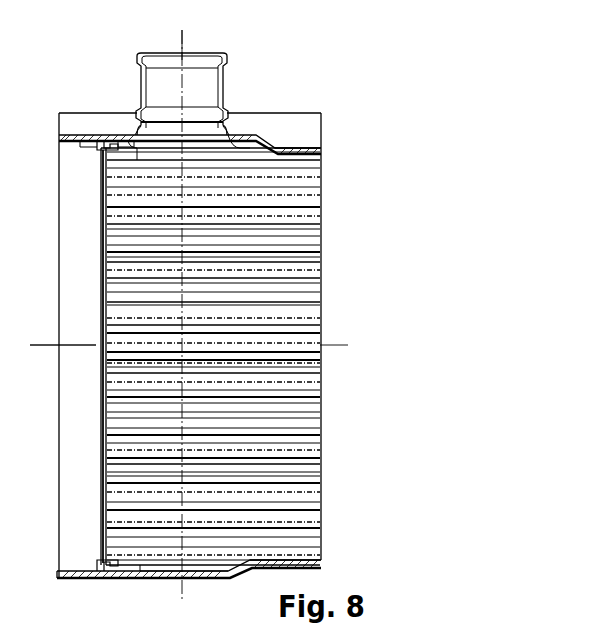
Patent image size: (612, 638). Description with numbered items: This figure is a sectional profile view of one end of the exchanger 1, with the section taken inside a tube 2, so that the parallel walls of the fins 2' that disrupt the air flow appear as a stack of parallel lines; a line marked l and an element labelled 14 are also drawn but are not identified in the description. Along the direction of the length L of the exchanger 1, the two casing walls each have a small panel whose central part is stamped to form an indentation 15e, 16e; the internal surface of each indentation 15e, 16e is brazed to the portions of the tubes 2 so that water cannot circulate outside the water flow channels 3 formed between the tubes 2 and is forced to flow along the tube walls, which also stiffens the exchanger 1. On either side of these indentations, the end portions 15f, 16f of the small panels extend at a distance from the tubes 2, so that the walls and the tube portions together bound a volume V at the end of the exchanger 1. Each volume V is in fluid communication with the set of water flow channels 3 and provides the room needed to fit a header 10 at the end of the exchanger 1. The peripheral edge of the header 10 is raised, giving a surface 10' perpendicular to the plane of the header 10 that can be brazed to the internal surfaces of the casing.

The exchanger 1 is at (48, 100).
The tubes 2 is at (167, 67).
The water flow channels 3 is at (215, 67).
The longitudinal axis l is at (182, 40).
The fins 2' is at (230, 356).
The inner wall of filter element 14 is at (103, 258).
The length of the exchanger L is at (71, 345).
The surface perpendicular to the plane of the header 10' is at (101, 107).
The volume V is at (142, 132).
The end portion of the small panel of the wall 15f is at (238, 135).
The indentation 15e is at (298, 142).
The header 10 is at (105, 590).
The end portion of the small panel of the wall 16f is at (168, 579).
The indentation 16e is at (254, 573).